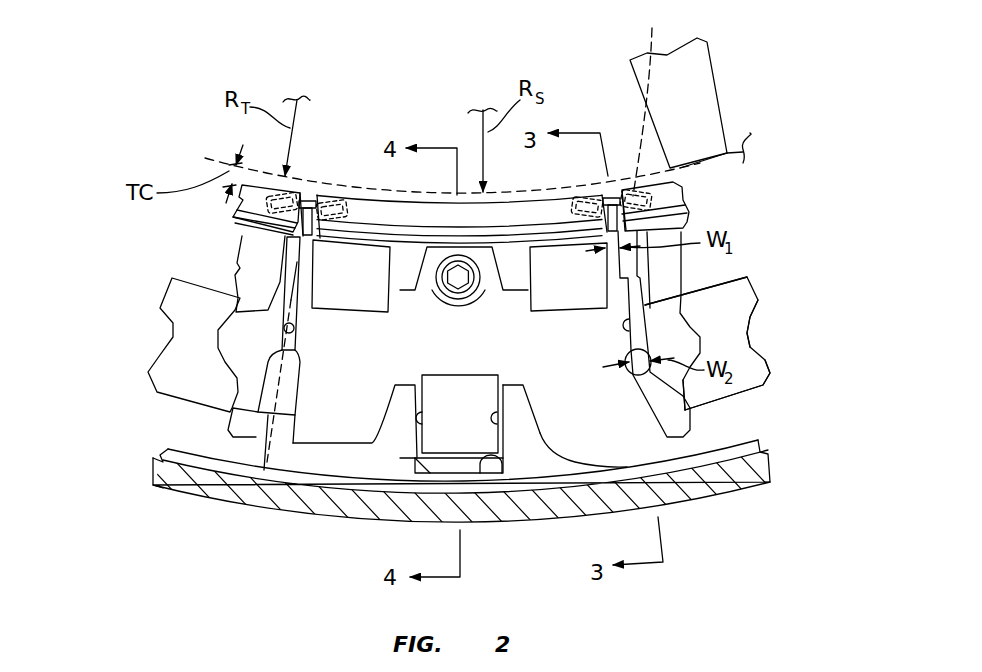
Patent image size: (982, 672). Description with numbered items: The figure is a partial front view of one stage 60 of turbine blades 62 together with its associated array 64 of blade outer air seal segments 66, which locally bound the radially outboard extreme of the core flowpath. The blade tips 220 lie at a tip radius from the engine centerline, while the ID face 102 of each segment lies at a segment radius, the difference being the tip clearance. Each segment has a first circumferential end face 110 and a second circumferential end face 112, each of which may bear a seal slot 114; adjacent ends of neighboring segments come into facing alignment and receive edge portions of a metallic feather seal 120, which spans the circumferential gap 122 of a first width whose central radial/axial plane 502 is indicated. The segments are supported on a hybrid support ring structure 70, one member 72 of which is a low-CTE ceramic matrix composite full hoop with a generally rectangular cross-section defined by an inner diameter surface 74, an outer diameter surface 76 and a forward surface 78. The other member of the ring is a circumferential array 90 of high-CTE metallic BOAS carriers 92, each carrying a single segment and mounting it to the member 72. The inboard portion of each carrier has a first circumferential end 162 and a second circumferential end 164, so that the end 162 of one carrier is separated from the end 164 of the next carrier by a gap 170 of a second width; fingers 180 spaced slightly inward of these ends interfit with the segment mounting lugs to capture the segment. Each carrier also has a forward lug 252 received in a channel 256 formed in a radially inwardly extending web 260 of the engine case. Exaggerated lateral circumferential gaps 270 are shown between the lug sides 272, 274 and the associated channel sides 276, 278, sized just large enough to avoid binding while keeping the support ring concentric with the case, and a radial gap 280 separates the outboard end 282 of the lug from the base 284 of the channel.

The stage 60 is at (745, 42).
The blades 62 is at (703, 107).
The array 64 is at (753, 200).
The blade outer air seal segment 66 is at (681, 203).
The support ring structure 70 is at (785, 307).
The member 72 is at (767, 386).
The inner diameter surface 74 is at (733, 278).
The outer diameter surface 76 is at (742, 402).
The forward surface 78 is at (733, 316).
The circumferential array 90 is at (207, 422).
The BOAS carrier 92 is at (267, 478).
The ID face 102 is at (513, 193).
The first circumferential end face 110 is at (609, 197).
The second circumferential end face 112 is at (320, 192).
The seal slot 114 is at (647, 98).
The seal 120 is at (241, 238).
The circumferential gap 122 is at (297, 259).
The first circumferential end 162 is at (623, 327).
The second circumferential end 164 is at (296, 330).
The gap 170 is at (646, 441).
The finger 180 is at (552, 287).
The tips 220 is at (703, 162).
The forward lug 252 is at (538, 505).
The channel 256 is at (330, 409).
The web 260 is at (535, 472).
The lateral circumferential gaps 270 is at (372, 482).
The side 272 is at (526, 388).
The side 274 is at (412, 410).
The side 276 is at (530, 430).
The side 278 is at (411, 444).
The radial gap 280 is at (462, 465).
The outboard end 282 is at (425, 467).
The base 284 is at (500, 474).
The central radial/axial plane 502 is at (227, 494).